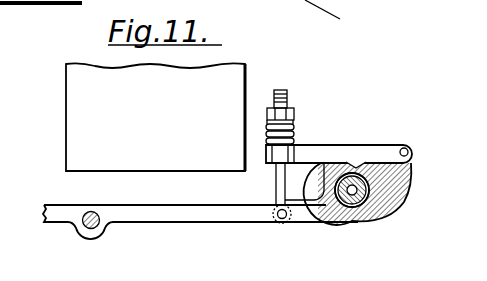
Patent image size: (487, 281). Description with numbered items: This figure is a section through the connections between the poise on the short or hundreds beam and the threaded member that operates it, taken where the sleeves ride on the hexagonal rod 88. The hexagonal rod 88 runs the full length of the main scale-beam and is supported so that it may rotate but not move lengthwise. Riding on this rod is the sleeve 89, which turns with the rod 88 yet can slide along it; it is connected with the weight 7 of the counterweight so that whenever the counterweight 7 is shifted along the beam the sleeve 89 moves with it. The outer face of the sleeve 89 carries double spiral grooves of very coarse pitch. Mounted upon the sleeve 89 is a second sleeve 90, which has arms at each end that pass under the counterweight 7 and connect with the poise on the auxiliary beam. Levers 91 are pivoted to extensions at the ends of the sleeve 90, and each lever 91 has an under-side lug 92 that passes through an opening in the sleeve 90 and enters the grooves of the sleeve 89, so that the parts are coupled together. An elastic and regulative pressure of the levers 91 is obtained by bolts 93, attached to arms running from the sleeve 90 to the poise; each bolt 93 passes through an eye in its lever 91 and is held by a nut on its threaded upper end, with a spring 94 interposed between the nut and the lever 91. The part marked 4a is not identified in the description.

The lever 4a is at (334, 19).
The counterweight 7 is at (155, 117).
The hexagonal rod 88 is at (382, 215).
The sleeve 89 is at (409, 190).
The sleeve 90 is at (359, 224).
The lever 91 is at (317, 159).
The lug 92 is at (357, 166).
The bolt 93 is at (288, 97).
The spring 94 is at (298, 125).